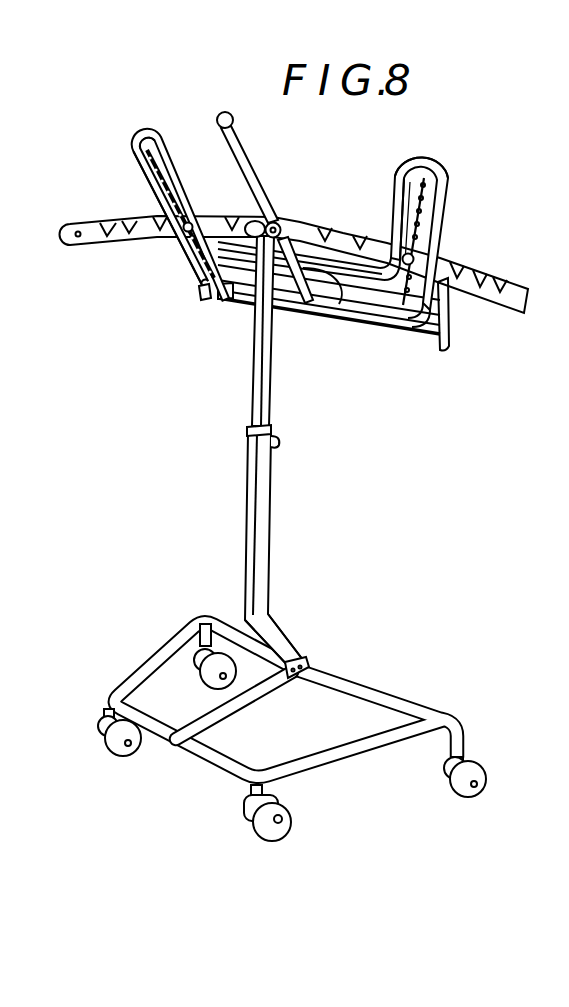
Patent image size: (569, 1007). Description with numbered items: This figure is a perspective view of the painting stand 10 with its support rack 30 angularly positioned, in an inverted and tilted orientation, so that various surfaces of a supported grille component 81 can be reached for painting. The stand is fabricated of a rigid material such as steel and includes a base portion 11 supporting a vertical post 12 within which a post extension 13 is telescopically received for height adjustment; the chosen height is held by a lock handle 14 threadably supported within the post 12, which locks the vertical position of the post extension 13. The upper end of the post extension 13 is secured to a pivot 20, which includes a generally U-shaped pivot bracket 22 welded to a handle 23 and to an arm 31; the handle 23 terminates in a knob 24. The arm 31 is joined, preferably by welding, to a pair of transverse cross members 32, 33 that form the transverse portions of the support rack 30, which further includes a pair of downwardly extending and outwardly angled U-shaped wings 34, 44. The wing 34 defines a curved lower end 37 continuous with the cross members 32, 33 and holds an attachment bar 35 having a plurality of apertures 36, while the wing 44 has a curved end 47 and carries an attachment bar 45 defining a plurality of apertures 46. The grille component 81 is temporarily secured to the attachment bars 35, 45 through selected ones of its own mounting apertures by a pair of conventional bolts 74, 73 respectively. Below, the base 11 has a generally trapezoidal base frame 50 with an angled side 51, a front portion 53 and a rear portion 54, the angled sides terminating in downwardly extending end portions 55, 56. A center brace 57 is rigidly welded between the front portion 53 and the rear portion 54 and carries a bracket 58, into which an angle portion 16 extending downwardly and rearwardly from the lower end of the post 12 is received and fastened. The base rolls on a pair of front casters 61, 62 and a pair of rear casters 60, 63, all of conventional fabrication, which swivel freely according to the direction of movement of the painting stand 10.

The painting stand 10 is at (196, 484).
The base portion 11 is at (172, 758).
The vertical post 12 is at (253, 493).
The post extension 13 is at (255, 373).
The lock handle 14 is at (281, 441).
The angle portion 16 is at (288, 652).
The pivot 20 is at (288, 210).
The pivot bracket 22 is at (282, 225).
The handle 23 is at (251, 178).
The knob 24 is at (225, 112).
The support rack 30 is at (227, 305).
The arm 31 is at (283, 304).
The cross member 32 is at (363, 330).
The cross member 33 is at (342, 323).
The wing 34 is at (446, 216).
The attachment bar 35 is at (430, 200).
The apertures 36 is at (428, 172).
The curved lower end 37 is at (408, 152).
The wing 44 is at (157, 210).
The attachment bar 45 is at (149, 173).
The apertures 46 is at (134, 141).
The curved end 47 is at (158, 146).
The base frame 50 is at (304, 704).
The angled side 51 is at (339, 753).
The front portion 53 is at (215, 766).
The rear portion 54 is at (392, 688).
The end portion 55 is at (462, 727).
The end portion 56 is at (197, 641).
The center brace 57 is at (243, 702).
The bracket 58 is at (308, 663).
The rear caster 60 is at (462, 777).
The front caster 61 is at (268, 835).
The front caster 62 is at (110, 735).
The rear caster 63 is at (208, 681).
The bolt 73 is at (294, 264).
The bolt 74 is at (416, 255).
The grille component 81 is at (446, 303).